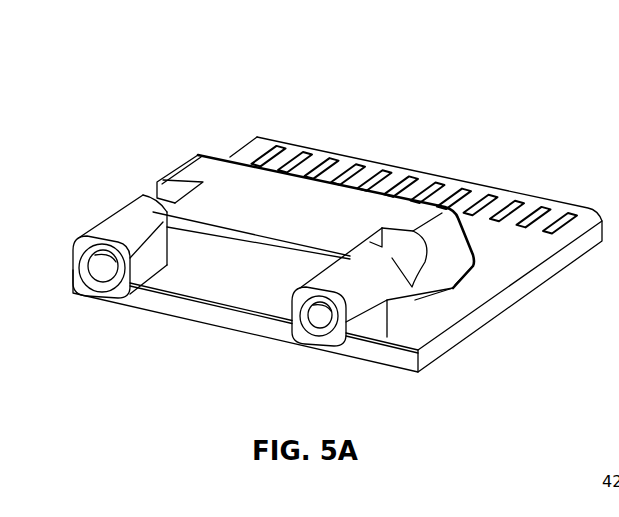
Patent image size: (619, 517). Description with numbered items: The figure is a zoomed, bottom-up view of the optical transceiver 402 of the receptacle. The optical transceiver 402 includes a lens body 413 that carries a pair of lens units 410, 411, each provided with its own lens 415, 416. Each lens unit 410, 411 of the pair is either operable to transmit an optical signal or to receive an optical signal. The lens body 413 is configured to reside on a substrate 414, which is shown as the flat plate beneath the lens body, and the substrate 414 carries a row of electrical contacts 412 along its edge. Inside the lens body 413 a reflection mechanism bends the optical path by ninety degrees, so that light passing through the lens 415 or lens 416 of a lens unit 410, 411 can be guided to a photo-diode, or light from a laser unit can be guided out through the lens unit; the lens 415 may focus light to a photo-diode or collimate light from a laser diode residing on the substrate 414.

The optical transceiver 402 is at (331, 242).
The lens unit 410 is at (113, 269).
The lens unit 411 is at (360, 298).
The electrical contacts 412 is at (410, 178).
The lens body 413 is at (182, 160).
The substrate 414 is at (448, 353).
The lens 415 is at (92, 279).
The lens 416 is at (322, 317).